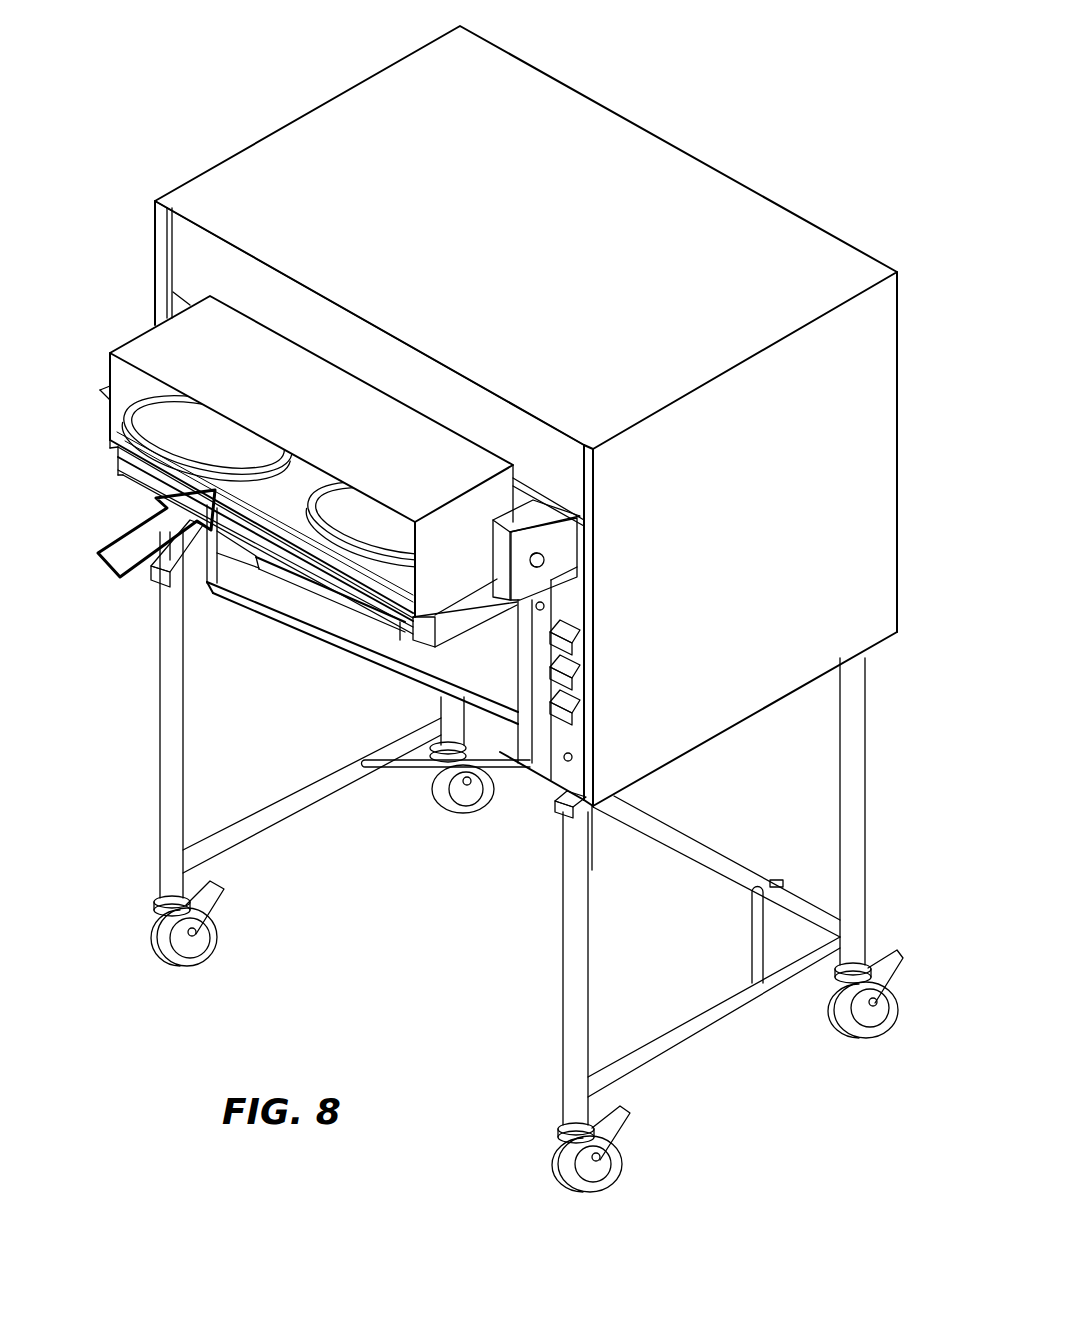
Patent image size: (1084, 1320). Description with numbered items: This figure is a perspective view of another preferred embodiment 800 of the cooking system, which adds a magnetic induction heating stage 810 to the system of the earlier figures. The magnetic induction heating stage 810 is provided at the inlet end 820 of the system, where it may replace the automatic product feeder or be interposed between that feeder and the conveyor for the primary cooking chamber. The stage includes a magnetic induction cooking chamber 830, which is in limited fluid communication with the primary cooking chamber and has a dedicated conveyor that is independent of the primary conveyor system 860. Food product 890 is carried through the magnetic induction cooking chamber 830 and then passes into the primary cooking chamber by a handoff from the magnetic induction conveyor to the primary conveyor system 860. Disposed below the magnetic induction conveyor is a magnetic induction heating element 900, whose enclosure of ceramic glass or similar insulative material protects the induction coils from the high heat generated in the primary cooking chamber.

The preferred embodiment 800 is at (736, 110).
The magnetic induction heating stage 810 is at (108, 430).
The inlet end 820 is at (141, 264).
The magnetic induction cooking chamber 830 is at (147, 341).
The primary conveyor system 860 is at (322, 540).
The food product 890 is at (205, 433).
The magnetic induction heating element 900 is at (423, 628).